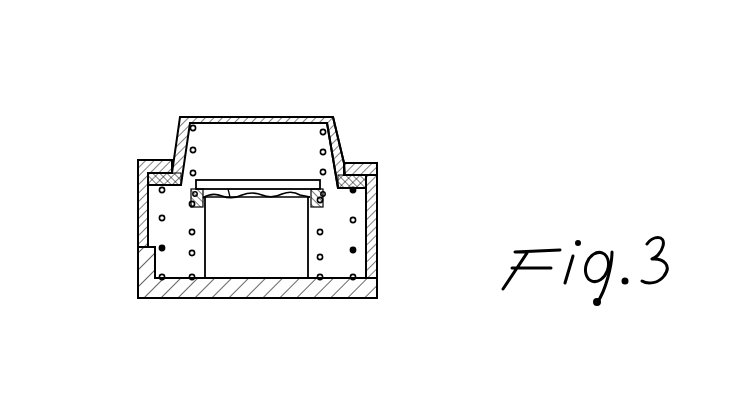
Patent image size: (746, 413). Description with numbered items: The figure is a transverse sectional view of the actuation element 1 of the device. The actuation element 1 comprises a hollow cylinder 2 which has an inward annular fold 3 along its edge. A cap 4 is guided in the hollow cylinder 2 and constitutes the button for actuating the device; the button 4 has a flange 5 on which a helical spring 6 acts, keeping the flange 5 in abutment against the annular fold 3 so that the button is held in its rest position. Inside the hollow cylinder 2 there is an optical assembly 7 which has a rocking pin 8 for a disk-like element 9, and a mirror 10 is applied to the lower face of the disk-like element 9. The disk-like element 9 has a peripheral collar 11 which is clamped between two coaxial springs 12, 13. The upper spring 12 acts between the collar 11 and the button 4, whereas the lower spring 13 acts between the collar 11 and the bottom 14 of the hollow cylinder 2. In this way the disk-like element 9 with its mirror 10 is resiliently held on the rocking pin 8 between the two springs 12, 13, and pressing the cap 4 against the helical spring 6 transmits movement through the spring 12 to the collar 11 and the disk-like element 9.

The actuation element 1 is at (399, 281).
The hollow cylinder 2 is at (140, 237).
The inward annular fold 3 is at (152, 158).
The cap 4 is at (183, 118).
The flange 5 is at (376, 172).
The helical spring 6 is at (159, 218).
The optical assembly 7 is at (294, 268).
The rocking pin 8 is at (257, 193).
The disk-like element 9 is at (232, 182).
The mirror 10 is at (230, 193).
The peripheral collar 11 is at (188, 203).
The spring 12 is at (342, 136).
The spring 13 is at (323, 232).
The bottom 14 is at (178, 292).